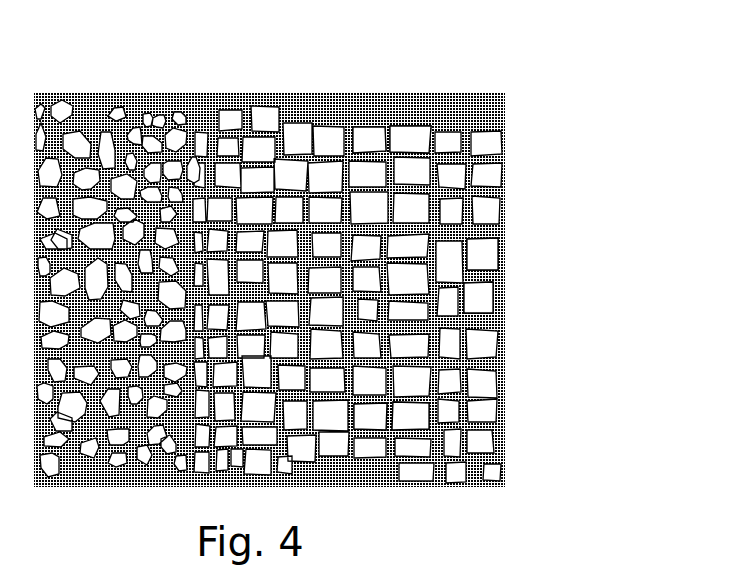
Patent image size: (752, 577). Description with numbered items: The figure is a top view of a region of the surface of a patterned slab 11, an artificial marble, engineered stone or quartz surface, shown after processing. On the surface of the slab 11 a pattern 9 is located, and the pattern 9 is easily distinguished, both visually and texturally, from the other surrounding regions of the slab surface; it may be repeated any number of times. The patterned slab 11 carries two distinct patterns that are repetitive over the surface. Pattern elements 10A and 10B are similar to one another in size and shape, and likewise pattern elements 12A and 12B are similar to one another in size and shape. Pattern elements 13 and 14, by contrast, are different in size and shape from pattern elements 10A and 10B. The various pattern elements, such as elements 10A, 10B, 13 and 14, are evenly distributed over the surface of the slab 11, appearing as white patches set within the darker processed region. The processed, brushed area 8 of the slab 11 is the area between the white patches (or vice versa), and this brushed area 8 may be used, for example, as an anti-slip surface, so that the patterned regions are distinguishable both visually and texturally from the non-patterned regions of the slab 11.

The brushed area 8 is at (478, 112).
The pattern 9 is at (480, 255).
The pattern element 10A is at (368, 138).
The pattern element 10B is at (368, 420).
The patterned slab 11 is at (575, 350).
The pattern element 12A is at (408, 418).
The pattern element 12B is at (412, 138).
The pattern element 13 is at (180, 118).
The pattern element 14 is at (120, 117).